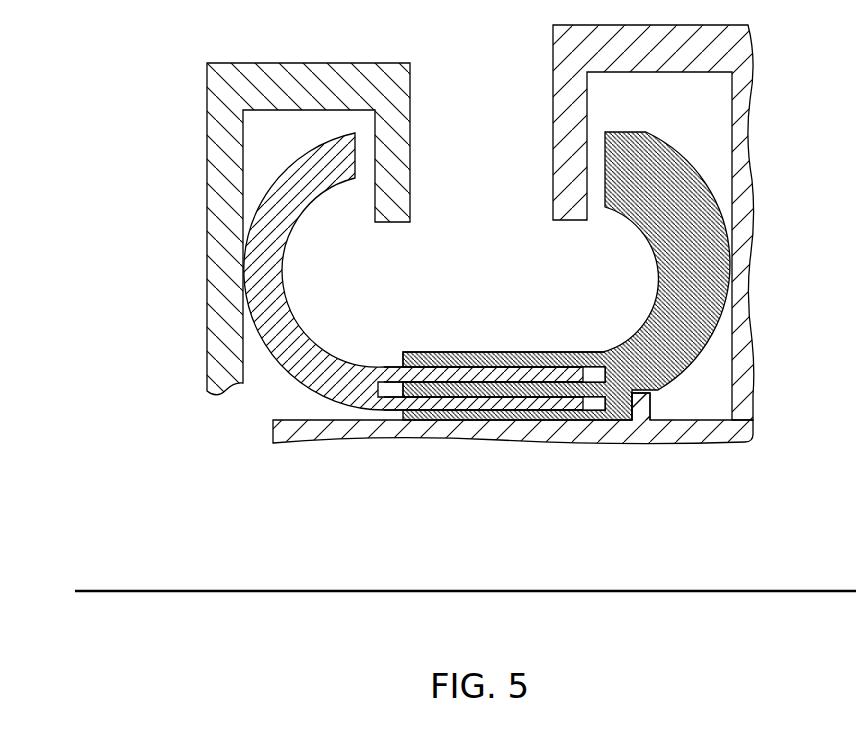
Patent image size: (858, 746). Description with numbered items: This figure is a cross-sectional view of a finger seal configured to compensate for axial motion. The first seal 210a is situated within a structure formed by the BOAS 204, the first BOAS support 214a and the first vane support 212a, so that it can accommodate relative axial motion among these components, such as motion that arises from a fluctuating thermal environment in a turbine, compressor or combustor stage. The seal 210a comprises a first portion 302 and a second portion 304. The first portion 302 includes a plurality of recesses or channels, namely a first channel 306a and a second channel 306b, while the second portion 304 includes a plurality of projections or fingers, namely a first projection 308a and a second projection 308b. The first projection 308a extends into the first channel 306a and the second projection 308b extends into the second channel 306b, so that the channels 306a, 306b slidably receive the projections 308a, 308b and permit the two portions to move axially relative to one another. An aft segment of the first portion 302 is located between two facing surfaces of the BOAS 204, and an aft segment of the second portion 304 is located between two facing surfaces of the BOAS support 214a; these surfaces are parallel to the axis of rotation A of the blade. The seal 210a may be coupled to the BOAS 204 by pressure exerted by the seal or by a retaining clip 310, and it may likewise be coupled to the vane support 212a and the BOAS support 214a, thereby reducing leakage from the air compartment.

The first BOAS support 214a is at (207, 142).
The BOAS 204 is at (755, 374).
The first vane support 212a is at (343, 441).
The retaining clip 310 is at (647, 414).
The second portion 304 is at (290, 268).
The first portion 302 is at (687, 157).
The first projection 308a is at (484, 370).
The second projection 308b is at (447, 400).
The first channel 306a is at (592, 372).
The second channel 306b is at (596, 399).
The first seal 210a is at (223, 457).
The axis of rotation A is at (722, 591).